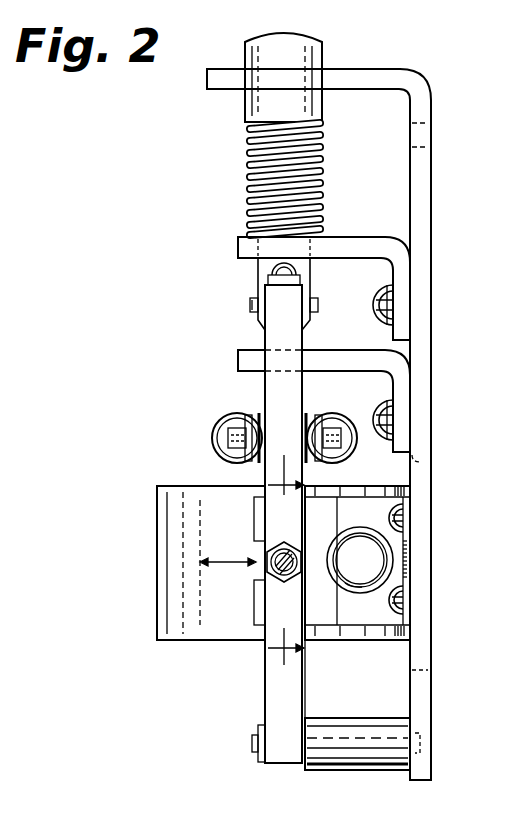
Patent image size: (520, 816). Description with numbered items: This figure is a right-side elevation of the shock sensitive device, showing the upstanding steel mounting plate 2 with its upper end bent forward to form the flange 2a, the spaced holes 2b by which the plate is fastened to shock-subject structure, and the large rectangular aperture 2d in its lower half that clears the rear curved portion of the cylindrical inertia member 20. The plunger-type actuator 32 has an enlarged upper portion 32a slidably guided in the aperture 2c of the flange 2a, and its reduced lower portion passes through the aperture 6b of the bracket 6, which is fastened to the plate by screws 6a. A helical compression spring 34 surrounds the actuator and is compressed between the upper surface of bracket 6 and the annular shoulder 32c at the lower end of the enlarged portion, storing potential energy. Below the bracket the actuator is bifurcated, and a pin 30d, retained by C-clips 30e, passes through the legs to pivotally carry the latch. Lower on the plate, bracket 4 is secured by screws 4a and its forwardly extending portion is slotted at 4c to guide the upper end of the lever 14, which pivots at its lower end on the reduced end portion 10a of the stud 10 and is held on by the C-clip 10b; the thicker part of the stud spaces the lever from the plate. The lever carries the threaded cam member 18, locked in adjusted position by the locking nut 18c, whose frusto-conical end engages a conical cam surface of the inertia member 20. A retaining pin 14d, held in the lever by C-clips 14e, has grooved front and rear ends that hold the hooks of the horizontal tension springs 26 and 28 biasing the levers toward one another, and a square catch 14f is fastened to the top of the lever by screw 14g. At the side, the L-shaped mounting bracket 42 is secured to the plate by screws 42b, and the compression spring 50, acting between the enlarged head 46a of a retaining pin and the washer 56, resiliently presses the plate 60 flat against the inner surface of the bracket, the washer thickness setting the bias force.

The mounting plate 2 is at (426, 216).
The flange 2a is at (216, 84).
The spaced holes 2b is at (426, 142).
The aperture 2c is at (330, 86).
The rectangular aperture 2d is at (422, 460).
The actuator 32 is at (252, 40).
The enlarged upper portion 32a is at (324, 58).
The annular shoulder 32c is at (325, 131).
The helical compression spring 34 is at (250, 163).
The bracket 6 is at (246, 248).
The aperture 6b is at (323, 256).
The screws 6a is at (378, 294).
The bracket 4 is at (242, 361).
The slot 4c is at (311, 358).
The screws 4a is at (378, 408).
The lever 14 is at (265, 680).
The catch 14f is at (268, 280).
The screw 14g is at (275, 268).
The C-clips 30e is at (250, 305).
The pin 30d is at (252, 310).
The helical tension spring 26 is at (218, 424).
The retaining pin 14d is at (249, 428).
The helical tension spring 28 is at (352, 430).
The C-clips 14e is at (318, 428).
The inertia member 20 is at (157, 506).
The plate 60 is at (256, 514).
The cam member 18 is at (272, 566).
The locking nut 18c is at (284, 576).
The mounting bracket 42 is at (408, 560).
The screws 42b is at (402, 518).
The helical compression spring 50 is at (334, 552).
The enlarged head 46a is at (356, 542).
The washer 56 is at (353, 588).
The stud 10 is at (352, 722).
The C-clip 10b is at (259, 728).
The reduced forward end portion 10a is at (253, 743).